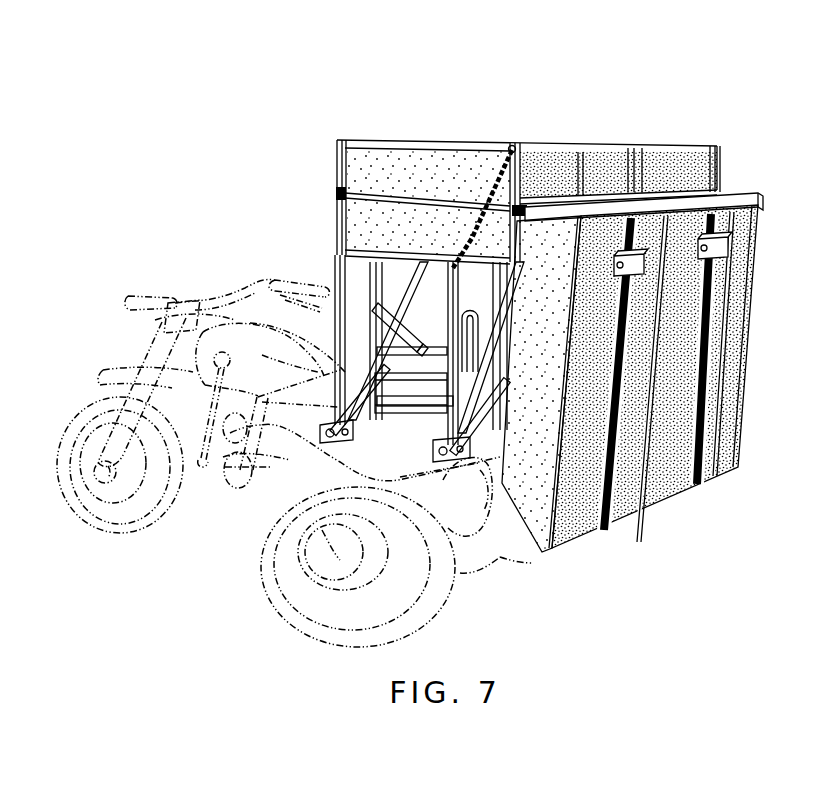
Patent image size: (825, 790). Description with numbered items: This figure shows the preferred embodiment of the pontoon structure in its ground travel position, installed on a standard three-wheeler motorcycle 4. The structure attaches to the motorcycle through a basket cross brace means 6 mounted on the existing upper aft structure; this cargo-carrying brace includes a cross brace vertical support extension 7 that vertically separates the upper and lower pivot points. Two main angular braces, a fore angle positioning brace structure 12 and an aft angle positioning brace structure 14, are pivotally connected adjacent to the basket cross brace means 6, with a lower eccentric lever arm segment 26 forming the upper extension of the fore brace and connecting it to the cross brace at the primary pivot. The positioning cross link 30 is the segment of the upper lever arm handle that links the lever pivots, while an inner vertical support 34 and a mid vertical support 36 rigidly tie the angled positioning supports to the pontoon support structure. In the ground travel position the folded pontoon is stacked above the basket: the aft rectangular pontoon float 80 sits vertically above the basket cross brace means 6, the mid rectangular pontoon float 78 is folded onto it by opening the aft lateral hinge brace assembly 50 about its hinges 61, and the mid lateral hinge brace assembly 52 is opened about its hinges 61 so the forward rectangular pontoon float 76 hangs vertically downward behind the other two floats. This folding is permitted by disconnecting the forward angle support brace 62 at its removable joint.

The three-wheeler motorcycle 4 is at (157, 360).
The basket cross brace means 6 is at (306, 401).
The cross brace vertical support extension 7 is at (382, 395).
The fore angle positioning brace structure 12 is at (378, 432).
The aft angle positioning brace structure 14 is at (435, 450).
The lower eccentric lever arm segment 26 is at (397, 283).
The positioning cross link 30 is at (415, 347).
The inner vertical support 34 is at (338, 345).
The mid vertical support 36 is at (370, 293).
The aft lateral hinge brace assembly 50 is at (337, 233).
The mid lateral hinge brace assembly 52 is at (717, 157).
The hinges 61 is at (338, 192).
The forward angle support brace 62 is at (707, 482).
The forward rectangular pontoon float 76 is at (725, 405).
The mid rectangular pontoon float 78 is at (403, 165).
The aft rectangular pontoon float 80 is at (362, 210).